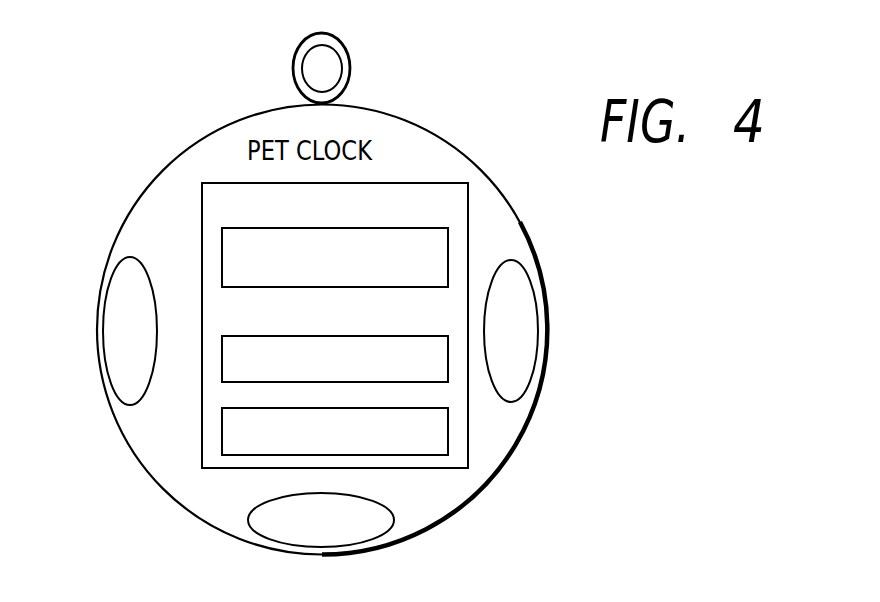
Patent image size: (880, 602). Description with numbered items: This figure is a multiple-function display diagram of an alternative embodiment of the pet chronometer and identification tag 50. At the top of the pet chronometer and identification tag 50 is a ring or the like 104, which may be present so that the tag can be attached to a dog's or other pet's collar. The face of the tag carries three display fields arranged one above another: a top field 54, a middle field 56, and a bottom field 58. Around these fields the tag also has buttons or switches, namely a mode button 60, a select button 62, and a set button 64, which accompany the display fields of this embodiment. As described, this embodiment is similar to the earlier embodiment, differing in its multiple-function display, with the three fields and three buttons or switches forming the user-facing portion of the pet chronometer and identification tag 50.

The pet chronometer and identification tag 50 is at (195, 127).
The ring 104 is at (350, 67).
The top field 54 is at (415, 228).
The middle field 56 is at (448, 358).
The bottom field 58 is at (448, 439).
The mode button 60 is at (130, 256).
The select button 62 is at (395, 521).
The set button 64 is at (511, 259).